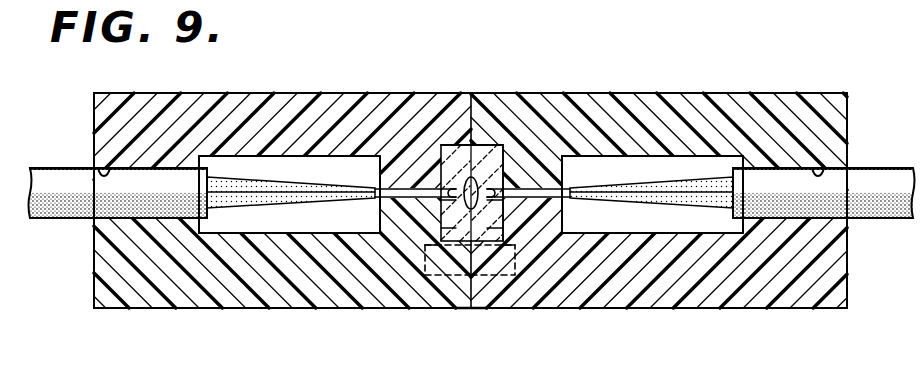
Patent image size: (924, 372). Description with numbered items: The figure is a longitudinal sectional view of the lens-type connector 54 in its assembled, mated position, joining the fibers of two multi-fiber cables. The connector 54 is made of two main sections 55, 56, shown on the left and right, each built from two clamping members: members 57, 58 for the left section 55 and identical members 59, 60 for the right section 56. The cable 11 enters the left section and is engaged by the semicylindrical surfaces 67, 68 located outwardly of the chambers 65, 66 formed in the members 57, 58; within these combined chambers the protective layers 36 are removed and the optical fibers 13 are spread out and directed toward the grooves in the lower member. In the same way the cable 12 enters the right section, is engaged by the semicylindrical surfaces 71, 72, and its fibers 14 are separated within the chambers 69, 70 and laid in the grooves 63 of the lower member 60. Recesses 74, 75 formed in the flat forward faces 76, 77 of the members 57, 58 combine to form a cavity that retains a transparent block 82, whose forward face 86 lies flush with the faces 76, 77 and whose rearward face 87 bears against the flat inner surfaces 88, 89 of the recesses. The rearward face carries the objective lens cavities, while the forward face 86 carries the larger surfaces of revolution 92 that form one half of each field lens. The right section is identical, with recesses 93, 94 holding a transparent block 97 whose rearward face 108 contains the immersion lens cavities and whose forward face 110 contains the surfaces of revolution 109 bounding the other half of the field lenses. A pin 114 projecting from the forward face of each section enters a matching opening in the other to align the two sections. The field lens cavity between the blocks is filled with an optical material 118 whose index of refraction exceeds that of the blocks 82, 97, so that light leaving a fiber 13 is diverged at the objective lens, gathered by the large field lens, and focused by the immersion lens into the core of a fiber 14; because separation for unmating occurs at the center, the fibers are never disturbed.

The cable 11 is at (64, 222).
The cable 12 is at (888, 168).
The optical fibers 13 is at (384, 188).
The optical fibers 14 is at (568, 188).
The protective layers 36 is at (276, 184).
The connector 54 is at (462, 82).
The main section 55 is at (262, 310).
The main section 56 is at (598, 310).
The clamping member 57 is at (182, 92).
The clamping member 58 is at (186, 309).
The clamping member 59 is at (647, 92).
The clamping member 60 is at (754, 308).
The grooves 63 is at (566, 200).
The chamber 65 is at (302, 128).
The chamber 66 is at (296, 233).
The semicylindrical surface 67 is at (100, 160).
The semicylindrical surface 68 is at (124, 220).
The chamber 69 is at (676, 128).
The chamber 70 is at (672, 233).
The semicylindrical surface 71 is at (818, 160).
The semicylindrical surface 72 is at (820, 220).
The recess 74 is at (448, 142).
The recess 75 is at (460, 250).
The forward face 76 is at (476, 92).
The forward face 77 is at (476, 308).
The transparent block 82 is at (430, 246).
The forward face 86 is at (478, 250).
The rearward face 87 is at (438, 226).
The inner surface 88 is at (440, 158).
The inner surface 89 is at (442, 208).
The surface of revolution 92 is at (446, 180).
The recess 93 is at (512, 146).
The recess 94 is at (510, 250).
The transparent block 97 is at (480, 150).
The rearward face 108 is at (500, 228).
The surfaces of revolution 109 is at (500, 206).
The forward face 110 is at (471, 132).
The pin 114 is at (456, 308).
The optical material 118 is at (498, 172).